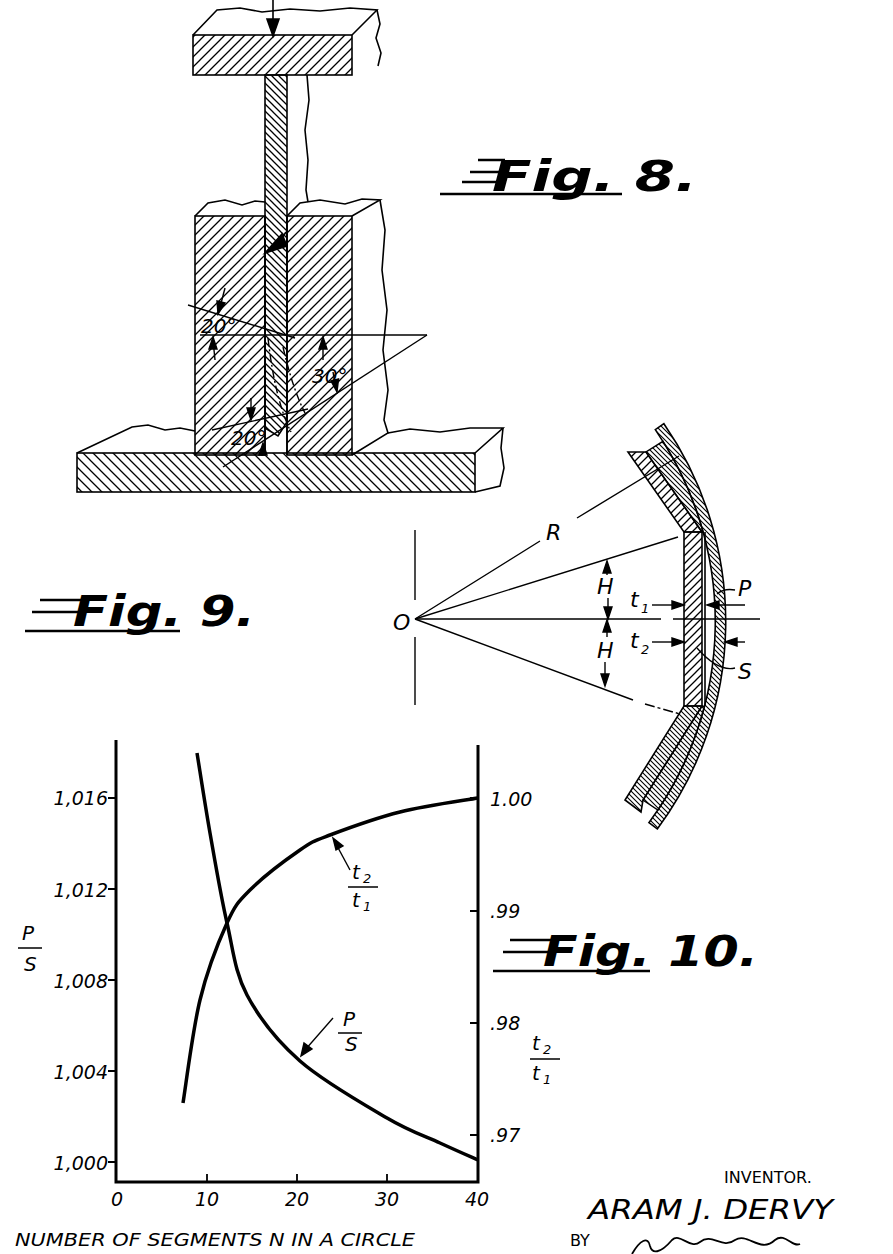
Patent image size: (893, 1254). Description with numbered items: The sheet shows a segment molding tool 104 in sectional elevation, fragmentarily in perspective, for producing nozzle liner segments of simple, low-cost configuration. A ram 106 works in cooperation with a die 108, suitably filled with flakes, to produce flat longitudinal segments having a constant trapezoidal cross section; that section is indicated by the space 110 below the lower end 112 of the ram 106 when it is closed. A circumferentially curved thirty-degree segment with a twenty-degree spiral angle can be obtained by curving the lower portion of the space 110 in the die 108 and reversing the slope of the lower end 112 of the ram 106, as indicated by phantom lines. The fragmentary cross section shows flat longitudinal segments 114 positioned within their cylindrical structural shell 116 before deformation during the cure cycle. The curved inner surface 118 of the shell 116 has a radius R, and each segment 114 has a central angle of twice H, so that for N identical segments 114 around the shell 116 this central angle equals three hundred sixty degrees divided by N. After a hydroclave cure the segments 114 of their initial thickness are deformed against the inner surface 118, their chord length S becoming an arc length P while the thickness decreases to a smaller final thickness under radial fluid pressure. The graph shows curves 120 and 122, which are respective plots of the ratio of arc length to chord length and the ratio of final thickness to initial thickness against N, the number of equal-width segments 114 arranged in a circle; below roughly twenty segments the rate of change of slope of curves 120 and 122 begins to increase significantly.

In FIG. 8, the segment molding tool 104 is at (218, 52).
In FIG. 8, the ram 106 is at (267, 125).
In FIG. 8, the die 108 is at (368, 275).
In FIG. 8, the space 110 is at (263, 382).
In FIG. 8, the lower end of the ram 112 is at (290, 228).
In FIG. 9, the flat longitudinal segment 114 is at (637, 763).
In FIG. 9, the cylindrical structural shell 116 is at (677, 790).
In FIG. 9, the curved inner surface 118 is at (665, 460).
In FIG. 10, the curve 120 is at (210, 835).
In FIG. 10, the curve 122 is at (200, 1000).